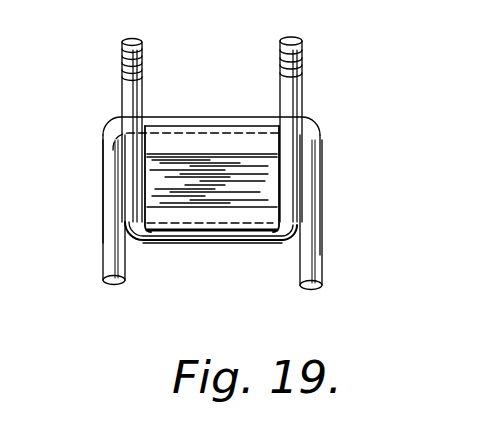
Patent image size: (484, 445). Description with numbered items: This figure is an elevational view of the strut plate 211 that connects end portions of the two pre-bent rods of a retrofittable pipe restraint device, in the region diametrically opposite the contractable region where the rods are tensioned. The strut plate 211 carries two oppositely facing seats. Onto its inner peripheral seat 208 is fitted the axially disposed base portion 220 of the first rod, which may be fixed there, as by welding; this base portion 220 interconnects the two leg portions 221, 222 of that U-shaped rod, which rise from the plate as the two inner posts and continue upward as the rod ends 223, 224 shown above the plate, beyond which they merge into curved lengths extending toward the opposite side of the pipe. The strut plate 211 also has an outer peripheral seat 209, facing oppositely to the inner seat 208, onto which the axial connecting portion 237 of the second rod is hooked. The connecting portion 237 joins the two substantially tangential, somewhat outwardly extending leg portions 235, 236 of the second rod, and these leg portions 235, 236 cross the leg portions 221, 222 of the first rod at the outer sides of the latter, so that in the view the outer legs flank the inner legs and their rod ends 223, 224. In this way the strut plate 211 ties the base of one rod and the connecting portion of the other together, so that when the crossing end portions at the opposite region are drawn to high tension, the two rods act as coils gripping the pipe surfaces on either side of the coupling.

The inner peripheral seat 208 is at (175, 225).
The outer peripheral seat 209 is at (235, 131).
The strut plate 211 is at (212, 180).
The axially disposed base portion 220 is at (241, 243).
The leg portion 221 is at (124, 156).
The leg portion 222 is at (291, 160).
The left threaded post 223 is at (122, 64).
The right threaded post 224 is at (303, 64).
The leg portion 235 is at (110, 206).
The leg portion 236 is at (312, 213).
The axial connecting portion 237 is at (165, 117).